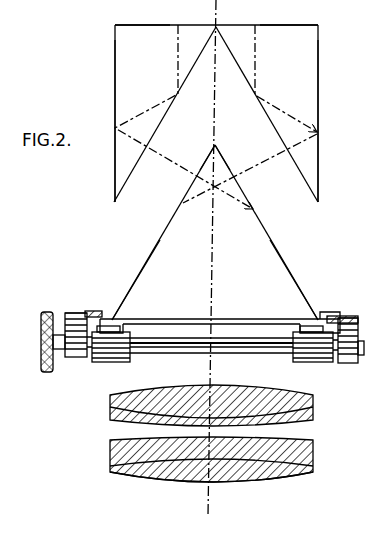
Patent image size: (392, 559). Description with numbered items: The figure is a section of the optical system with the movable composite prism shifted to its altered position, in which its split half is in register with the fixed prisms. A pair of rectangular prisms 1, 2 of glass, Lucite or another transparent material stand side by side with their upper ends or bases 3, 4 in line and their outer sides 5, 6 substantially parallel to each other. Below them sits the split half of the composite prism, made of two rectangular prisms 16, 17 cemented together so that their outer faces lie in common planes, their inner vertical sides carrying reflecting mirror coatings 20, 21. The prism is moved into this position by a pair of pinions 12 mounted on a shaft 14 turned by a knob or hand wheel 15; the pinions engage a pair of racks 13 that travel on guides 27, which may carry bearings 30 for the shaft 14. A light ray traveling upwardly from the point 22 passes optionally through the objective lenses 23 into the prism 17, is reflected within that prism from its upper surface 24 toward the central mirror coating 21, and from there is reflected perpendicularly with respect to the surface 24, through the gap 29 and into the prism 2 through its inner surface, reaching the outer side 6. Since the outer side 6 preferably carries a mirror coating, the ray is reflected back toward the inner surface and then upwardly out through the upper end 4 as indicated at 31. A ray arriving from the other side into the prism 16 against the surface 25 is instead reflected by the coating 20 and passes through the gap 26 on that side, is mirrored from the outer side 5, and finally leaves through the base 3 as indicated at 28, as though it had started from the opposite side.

The rectangular prism 1 is at (117, 33).
The rectangular prism 2 is at (318, 42).
The upper end or base 3 is at (140, 24).
The upper end or base 4 is at (292, 24).
The outer side 5 is at (115, 86).
The outer side 6 is at (318, 86).
The pinions 12 is at (108, 362).
The racks 13 is at (95, 311).
The shaft 14 is at (196, 351).
The knob or hand wheel 15 is at (41, 340).
The rectangular prism 16 is at (157, 248).
The rectangular prism 17 is at (296, 280).
The reflecting mirror coating 20 is at (207, 163).
The reflecting mirror coating 21 is at (222, 160).
The point 22 is at (170, 486).
The objective lenses 23 is at (318, 419).
The upper surface 24 is at (278, 250).
The surface 25 is at (141, 264).
The gap 26 is at (165, 115).
The guides 27 is at (72, 313).
The light ray exit 28 is at (178, 25).
The gap 29 is at (267, 114).
The bearings 30 is at (78, 357).
The light ray exit 31 is at (255, 25).